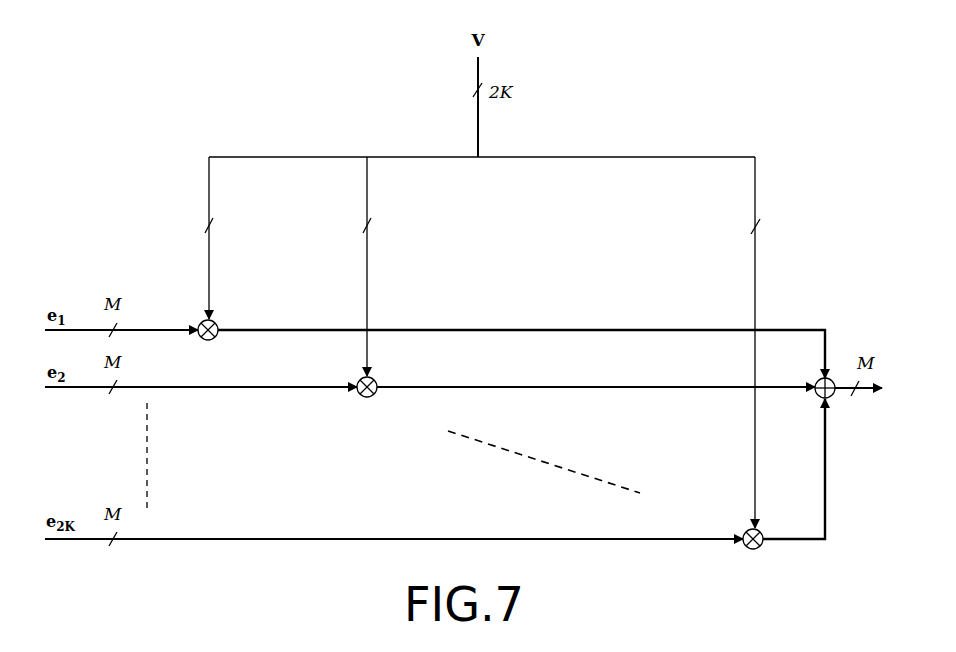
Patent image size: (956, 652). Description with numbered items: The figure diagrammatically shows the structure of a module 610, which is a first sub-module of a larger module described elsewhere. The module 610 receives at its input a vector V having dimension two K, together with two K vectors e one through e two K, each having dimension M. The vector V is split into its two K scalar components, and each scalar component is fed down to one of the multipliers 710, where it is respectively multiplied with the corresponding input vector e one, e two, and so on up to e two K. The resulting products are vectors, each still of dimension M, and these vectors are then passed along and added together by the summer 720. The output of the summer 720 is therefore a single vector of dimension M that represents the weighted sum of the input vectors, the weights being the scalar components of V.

The module 610 is at (750, 122).
The multipliers 710 is at (216, 320).
The summer 720 is at (830, 378).